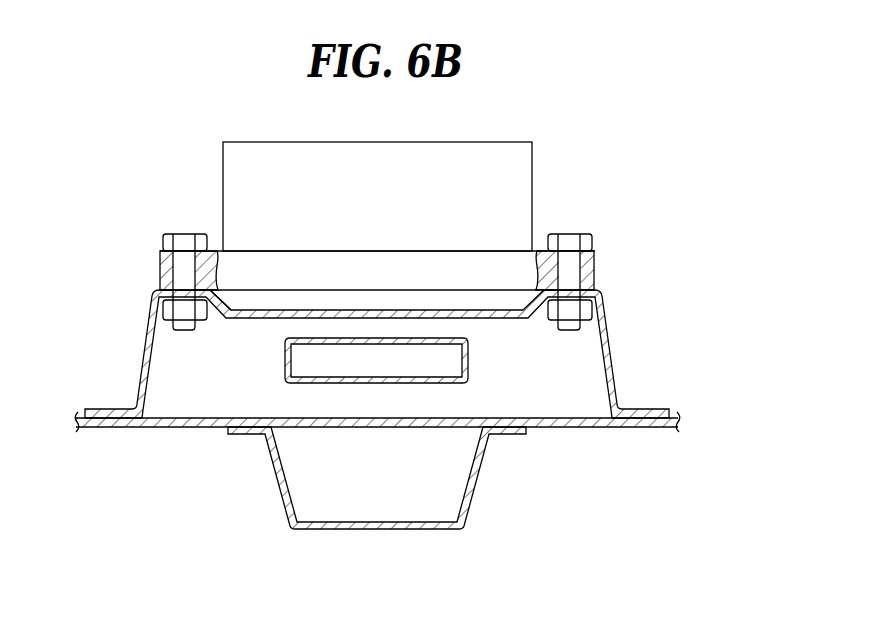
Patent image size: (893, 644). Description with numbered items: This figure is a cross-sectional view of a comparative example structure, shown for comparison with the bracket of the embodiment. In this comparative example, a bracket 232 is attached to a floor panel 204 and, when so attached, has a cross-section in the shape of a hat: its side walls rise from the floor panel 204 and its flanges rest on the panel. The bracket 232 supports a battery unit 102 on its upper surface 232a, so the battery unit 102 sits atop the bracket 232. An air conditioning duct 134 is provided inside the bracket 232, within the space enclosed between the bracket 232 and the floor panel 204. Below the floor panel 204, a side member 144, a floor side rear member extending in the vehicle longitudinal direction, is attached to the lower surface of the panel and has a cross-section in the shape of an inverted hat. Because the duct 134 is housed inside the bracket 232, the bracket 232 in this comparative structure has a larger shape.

The battery unit 102 is at (533, 160).
The bracket 232 is at (650, 320).
The upper surface 232a is at (211, 299).
The air conditioning duct 134 is at (469, 360).
The floor panel 204 is at (173, 428).
The side member 144 is at (473, 488).